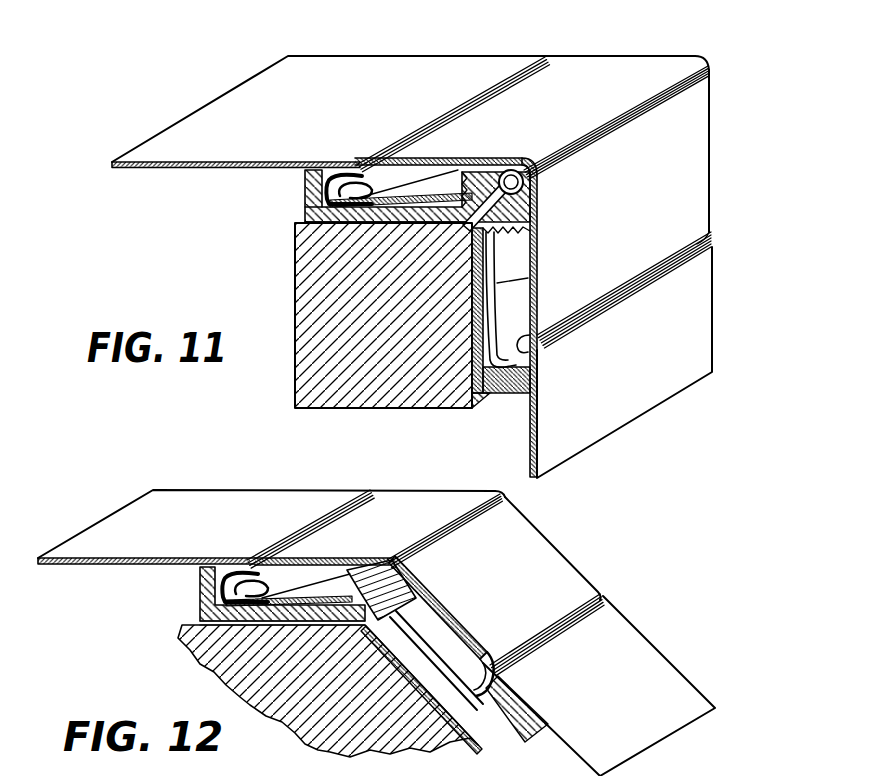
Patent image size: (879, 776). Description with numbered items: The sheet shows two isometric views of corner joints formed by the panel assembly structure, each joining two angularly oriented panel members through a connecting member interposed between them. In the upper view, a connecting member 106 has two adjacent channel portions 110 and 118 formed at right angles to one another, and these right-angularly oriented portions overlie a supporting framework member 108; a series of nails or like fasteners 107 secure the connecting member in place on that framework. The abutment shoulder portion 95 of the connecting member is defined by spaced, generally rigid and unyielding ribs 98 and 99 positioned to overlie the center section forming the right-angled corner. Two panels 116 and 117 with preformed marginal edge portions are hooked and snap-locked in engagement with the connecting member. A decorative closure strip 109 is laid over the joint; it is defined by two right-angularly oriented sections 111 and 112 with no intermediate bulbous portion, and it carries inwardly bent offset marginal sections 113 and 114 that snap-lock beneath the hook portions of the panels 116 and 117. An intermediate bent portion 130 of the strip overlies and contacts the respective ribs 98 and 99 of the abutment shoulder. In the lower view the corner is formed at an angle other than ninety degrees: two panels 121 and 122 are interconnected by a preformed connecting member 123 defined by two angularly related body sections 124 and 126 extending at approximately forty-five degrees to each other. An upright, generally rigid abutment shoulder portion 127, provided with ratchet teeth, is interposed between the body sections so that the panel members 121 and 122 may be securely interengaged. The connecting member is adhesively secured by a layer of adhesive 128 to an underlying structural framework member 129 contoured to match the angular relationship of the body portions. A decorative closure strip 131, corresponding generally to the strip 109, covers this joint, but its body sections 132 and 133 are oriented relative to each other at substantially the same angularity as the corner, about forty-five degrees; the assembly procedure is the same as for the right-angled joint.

In FIG. 11, the abutment shoulder portion 95 is at (532, 250).
In FIG. 11, the rib 98 is at (505, 166).
In FIG. 11, the rib 99 is at (530, 216).
In FIG. 11, the connecting member 106 is at (350, 226).
In FIG. 11, the fasteners 107 is at (418, 286).
In FIG. 11, the supporting framework member 108 is at (296, 355).
In FIG. 11, the decorative closure strip 109 is at (564, 246).
In FIG. 11, the channel portion 110 is at (393, 226).
In FIG. 11, the section of closure strip 111 is at (633, 57).
In FIG. 11, the section of closure strip 112 is at (705, 210).
In FIG. 11, the inwardly bent offset marginal section 113 is at (378, 165).
In FIG. 11, the inwardly bent offset marginal section 114 is at (500, 320).
In FIG. 11, the panel 116 is at (312, 114).
In FIG. 11, the panel 117 is at (622, 377).
In FIG. 11, the channel portion 118 is at (471, 320).
In FIG. 12, the panel 121 is at (186, 534).
In FIG. 12, the panel 122 is at (606, 677).
In FIG. 12, the preformed connecting member 123 is at (338, 628).
In FIG. 12, the body section 124 is at (260, 628).
In FIG. 12, the body section 126 is at (437, 690).
In FIG. 12, the abutment shoulder portion 127 is at (391, 588).
In FIG. 12, the layer of adhesive 128 is at (205, 647).
In FIG. 12, the structural framework member 129 is at (324, 740).
In FIG. 11, the intermediate bent portion 130 is at (710, 68).
In FIG. 12, the decorative closure strip 131 is at (437, 574).
In FIG. 12, the body section of closure strip 132 is at (437, 497).
In FIG. 12, the body section of closure strip 133 is at (578, 572).